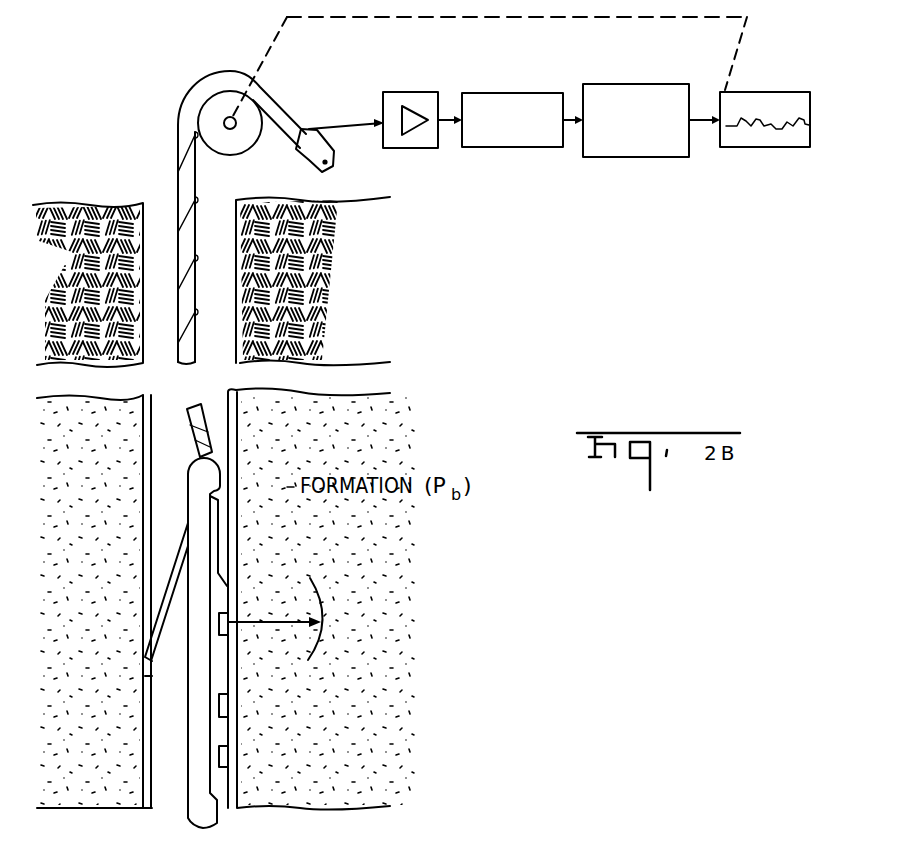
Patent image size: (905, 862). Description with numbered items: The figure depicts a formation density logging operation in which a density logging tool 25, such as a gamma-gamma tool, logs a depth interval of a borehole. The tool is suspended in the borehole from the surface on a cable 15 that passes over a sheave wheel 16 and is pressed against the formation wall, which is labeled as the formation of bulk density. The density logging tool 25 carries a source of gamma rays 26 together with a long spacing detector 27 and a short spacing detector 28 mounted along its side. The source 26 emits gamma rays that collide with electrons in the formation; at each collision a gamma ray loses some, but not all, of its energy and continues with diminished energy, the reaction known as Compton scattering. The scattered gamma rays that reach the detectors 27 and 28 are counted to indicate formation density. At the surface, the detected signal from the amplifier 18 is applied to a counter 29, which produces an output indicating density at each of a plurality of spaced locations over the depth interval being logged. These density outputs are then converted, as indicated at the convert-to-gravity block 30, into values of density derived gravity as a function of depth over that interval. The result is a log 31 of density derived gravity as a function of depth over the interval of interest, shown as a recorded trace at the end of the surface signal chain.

The logging cable 15 is at (178, 155).
The sheave wheel 16 is at (243, 146).
The amplifier 18 is at (414, 92).
The counter 29 is at (521, 93).
The conversion to density derived gravity 30 is at (650, 84).
The log of density derived gravity 31 is at (775, 92).
The density logging tool 25 is at (190, 481).
The source of gamma rays 26 is at (226, 758).
The long spacing detector 27 is at (226, 618).
The short spacing detector 28 is at (226, 705).